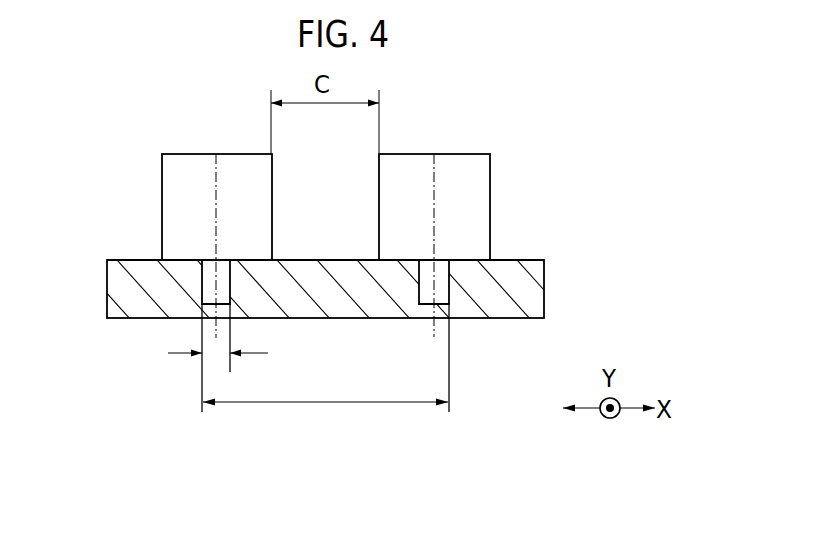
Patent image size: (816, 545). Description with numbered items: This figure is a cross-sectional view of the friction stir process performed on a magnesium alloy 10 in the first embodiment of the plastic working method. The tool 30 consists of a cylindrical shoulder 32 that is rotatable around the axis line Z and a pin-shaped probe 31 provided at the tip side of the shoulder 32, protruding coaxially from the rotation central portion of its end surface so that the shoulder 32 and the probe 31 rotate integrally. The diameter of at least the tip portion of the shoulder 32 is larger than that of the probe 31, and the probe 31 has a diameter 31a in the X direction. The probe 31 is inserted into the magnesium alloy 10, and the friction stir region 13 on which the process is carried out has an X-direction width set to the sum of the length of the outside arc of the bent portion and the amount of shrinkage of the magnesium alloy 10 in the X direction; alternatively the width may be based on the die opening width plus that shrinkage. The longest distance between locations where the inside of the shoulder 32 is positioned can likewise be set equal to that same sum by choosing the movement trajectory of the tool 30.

The magnesium alloy 10 is at (545, 289).
The friction stir region 13 is at (410, 402).
The tool 30 is at (330, 245).
The probe 31 is at (202, 292).
The diameter 31a is at (217, 358).
The shoulder 32 is at (187, 154).